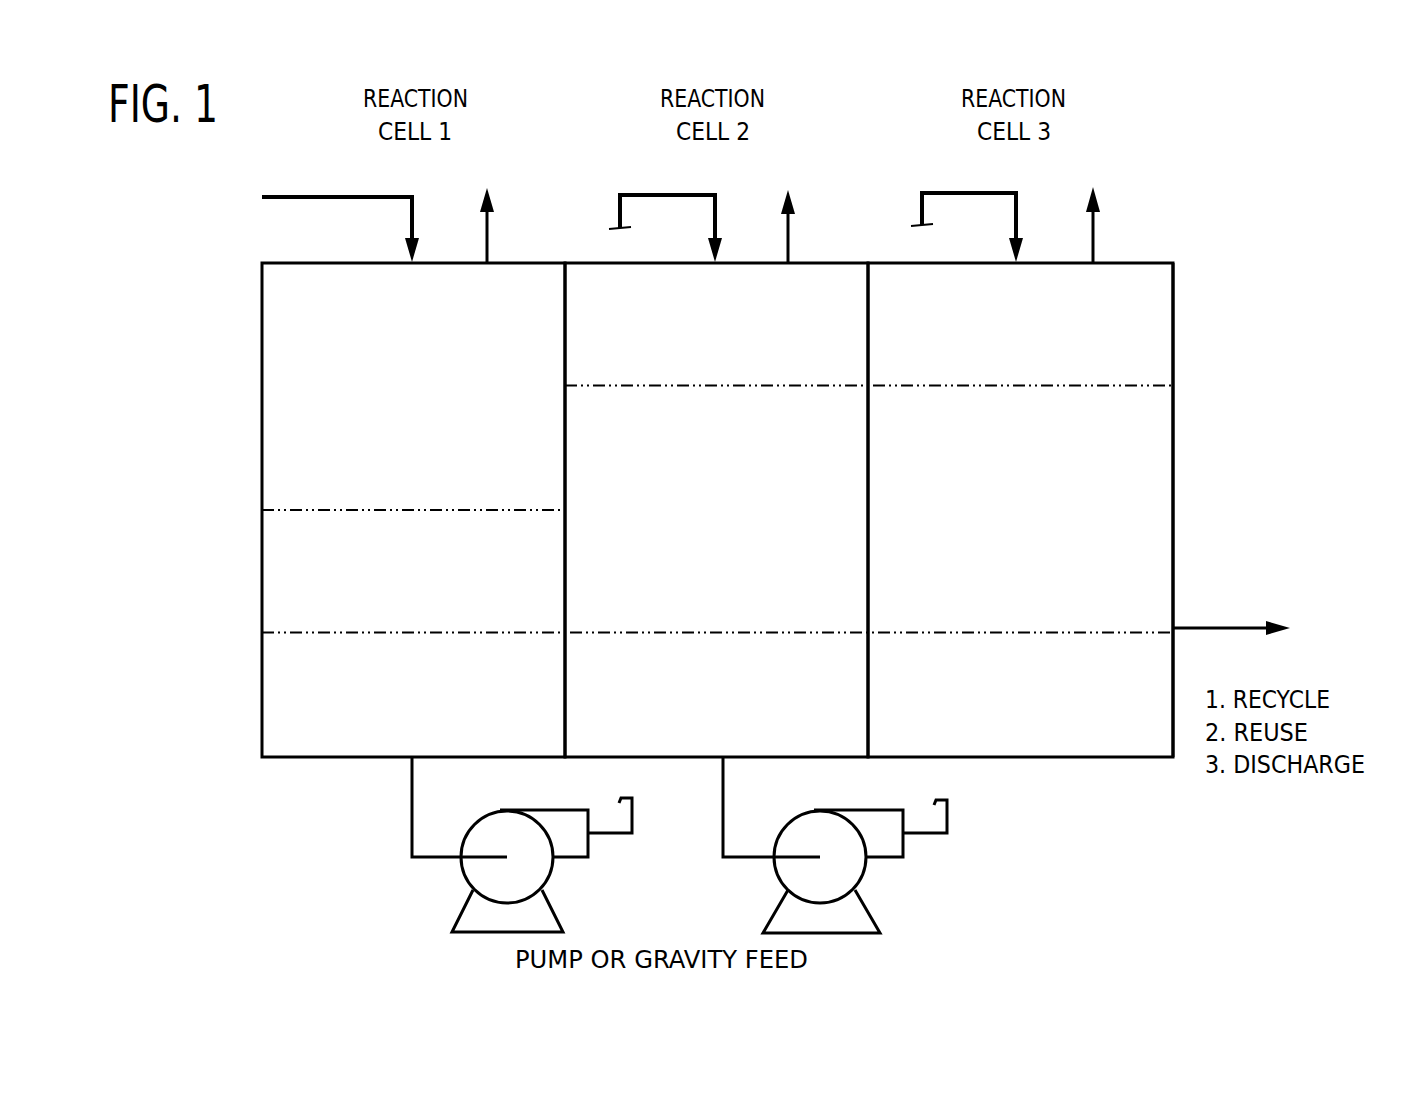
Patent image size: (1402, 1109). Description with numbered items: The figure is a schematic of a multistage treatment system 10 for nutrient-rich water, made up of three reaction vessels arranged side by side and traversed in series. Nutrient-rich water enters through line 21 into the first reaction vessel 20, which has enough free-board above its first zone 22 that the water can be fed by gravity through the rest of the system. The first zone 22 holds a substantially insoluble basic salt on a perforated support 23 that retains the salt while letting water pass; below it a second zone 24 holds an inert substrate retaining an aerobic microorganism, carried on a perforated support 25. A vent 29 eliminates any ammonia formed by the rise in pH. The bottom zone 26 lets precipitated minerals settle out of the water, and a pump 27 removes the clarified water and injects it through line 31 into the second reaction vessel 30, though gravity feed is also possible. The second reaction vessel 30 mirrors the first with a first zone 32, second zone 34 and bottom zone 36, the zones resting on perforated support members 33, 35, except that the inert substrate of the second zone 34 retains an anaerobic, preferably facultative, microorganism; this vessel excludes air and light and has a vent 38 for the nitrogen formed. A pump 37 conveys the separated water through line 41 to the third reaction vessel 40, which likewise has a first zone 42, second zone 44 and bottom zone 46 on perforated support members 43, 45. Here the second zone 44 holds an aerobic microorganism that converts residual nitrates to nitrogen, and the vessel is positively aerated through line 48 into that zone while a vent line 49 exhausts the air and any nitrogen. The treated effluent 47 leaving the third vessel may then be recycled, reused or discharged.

The multistage treatment system 10 is at (1288, 283).
The first reaction vessel 20 is at (262, 340).
The line 21 is at (333, 197).
The first zone 22 is at (525, 351).
The perforated support 23 is at (360, 510).
The second zone 24 is at (535, 578).
The perforated support 25 is at (355, 633).
The bottom zone 26 is at (535, 685).
The pump 27 is at (520, 852).
The vent 29 is at (487, 232).
The second reaction vessel 30 is at (832, 262).
The line 31 is at (660, 195).
The first zone 32 is at (836, 338).
The perforated support member 33 is at (710, 386).
The second zone 34 is at (833, 455).
The perforated support member 35 is at (723, 632).
The zone 36 is at (850, 710).
The pump 37 is at (835, 847).
The vent 38 is at (788, 237).
The reaction vessel 40 is at (1157, 262).
The line 41 is at (965, 193).
The first zone 42 is at (1116, 335).
The perforated support member 43 is at (1002, 385).
The second zone 44 is at (1146, 451).
The perforated support member 45 is at (1010, 632).
The zone 46 is at (1154, 707).
The effluent 47 is at (1212, 632).
The line 48 is at (1173, 540).
The vent line 49 is at (1093, 230).